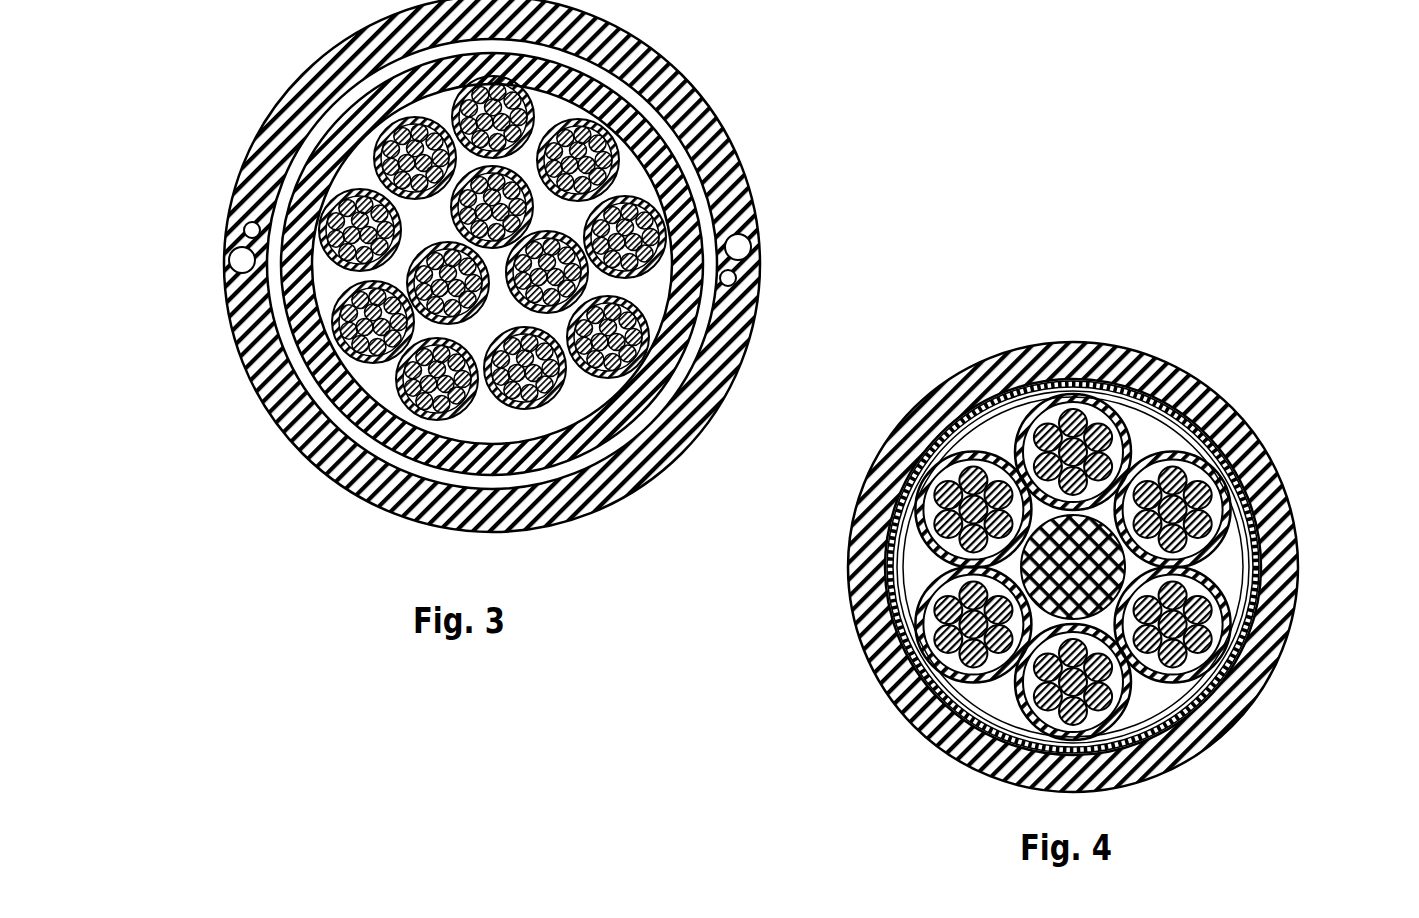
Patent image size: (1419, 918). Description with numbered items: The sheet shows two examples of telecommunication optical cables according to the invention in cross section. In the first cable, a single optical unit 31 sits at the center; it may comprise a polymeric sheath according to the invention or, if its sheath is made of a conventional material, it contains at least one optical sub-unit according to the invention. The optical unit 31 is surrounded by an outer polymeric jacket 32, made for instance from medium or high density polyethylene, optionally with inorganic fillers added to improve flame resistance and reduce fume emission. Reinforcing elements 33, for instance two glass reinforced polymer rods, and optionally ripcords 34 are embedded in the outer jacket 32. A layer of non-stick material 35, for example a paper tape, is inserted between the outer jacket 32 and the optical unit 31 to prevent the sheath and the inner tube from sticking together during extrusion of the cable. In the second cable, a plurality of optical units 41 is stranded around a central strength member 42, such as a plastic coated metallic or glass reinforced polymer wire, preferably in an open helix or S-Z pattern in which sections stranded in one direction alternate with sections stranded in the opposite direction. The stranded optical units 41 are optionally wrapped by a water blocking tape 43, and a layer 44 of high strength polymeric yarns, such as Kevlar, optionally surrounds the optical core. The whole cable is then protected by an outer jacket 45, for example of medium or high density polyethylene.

In FIG. 3, the optical unit 31 is at (287, 228).
In FIG. 3, the outer polymeric jacket 32 is at (703, 114).
In FIG. 3, the reinforcing elements 33 is at (748, 244).
In FIG. 3, the ripcords 34 is at (735, 280).
In FIG. 3, the layer of non-stick material 35 is at (328, 400).
In FIG. 4, the optical units 41 is at (924, 542).
In FIG. 4, the central strength member 42 is at (892, 690).
In FIG. 4, the water blocking tape 43 is at (1250, 544).
In FIG. 4, the layer of high strength polymeric yarns 44 is at (1262, 614).
In FIG. 4, the outer jacket 45 is at (1262, 470).